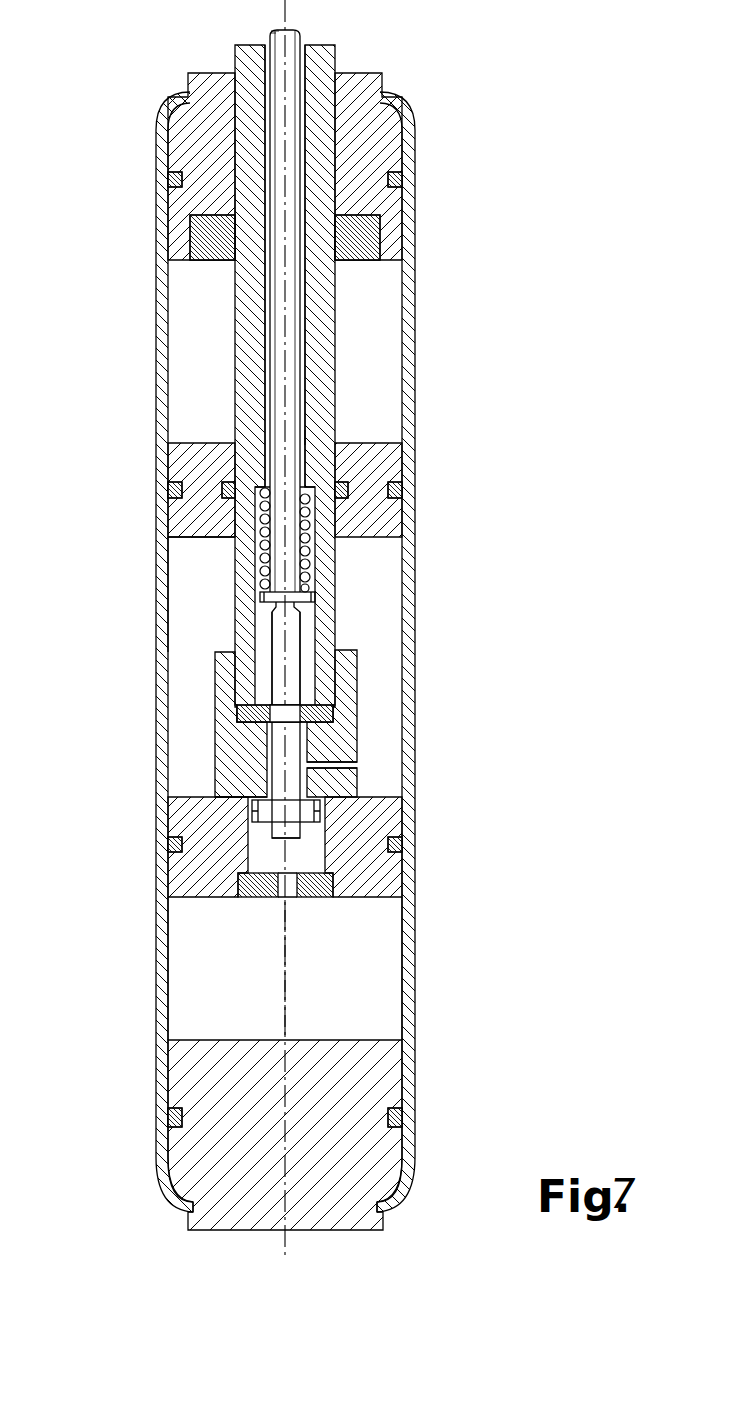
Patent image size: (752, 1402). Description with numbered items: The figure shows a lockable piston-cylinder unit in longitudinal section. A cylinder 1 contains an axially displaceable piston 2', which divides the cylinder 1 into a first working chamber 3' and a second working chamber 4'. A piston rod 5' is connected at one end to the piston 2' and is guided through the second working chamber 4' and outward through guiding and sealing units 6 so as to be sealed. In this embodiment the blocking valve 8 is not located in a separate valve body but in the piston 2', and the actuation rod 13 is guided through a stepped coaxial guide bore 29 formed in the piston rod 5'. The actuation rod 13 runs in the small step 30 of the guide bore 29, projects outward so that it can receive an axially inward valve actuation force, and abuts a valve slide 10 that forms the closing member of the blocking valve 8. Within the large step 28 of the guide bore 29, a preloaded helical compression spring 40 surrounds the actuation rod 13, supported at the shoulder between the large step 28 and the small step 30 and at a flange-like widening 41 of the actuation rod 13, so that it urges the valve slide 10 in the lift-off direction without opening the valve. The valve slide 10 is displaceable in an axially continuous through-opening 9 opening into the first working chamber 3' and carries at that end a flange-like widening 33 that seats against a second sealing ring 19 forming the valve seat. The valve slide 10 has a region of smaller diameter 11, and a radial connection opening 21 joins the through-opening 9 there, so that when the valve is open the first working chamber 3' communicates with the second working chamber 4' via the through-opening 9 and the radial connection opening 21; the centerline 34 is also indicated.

The cylinder 1 is at (157, 300).
The guiding and sealing units 6 is at (205, 140).
The actuation rod 13 is at (290, 142).
The piston rod 5' is at (209, 376).
The small step 30 is at (305, 322).
The guide bore 29 is at (313, 437).
The helical compression spring 40 is at (337, 550).
The flange-like widening 41 is at (313, 595).
The large step 28 is at (308, 622).
The valve slide 10 is at (273, 628).
The second working chamber 4' is at (137, 594).
The region of smaller diameter 11 is at (260, 735).
The through-opening 9 is at (307, 735).
The radial connection opening 21 is at (332, 767).
The second sealing ring 19 is at (260, 793).
The flange-like widening 33 is at (257, 815).
The blocking valve 8 is at (342, 800).
The piston 2' is at (223, 847).
The first working chamber 3' is at (223, 968).
The axis 34 is at (290, 993).